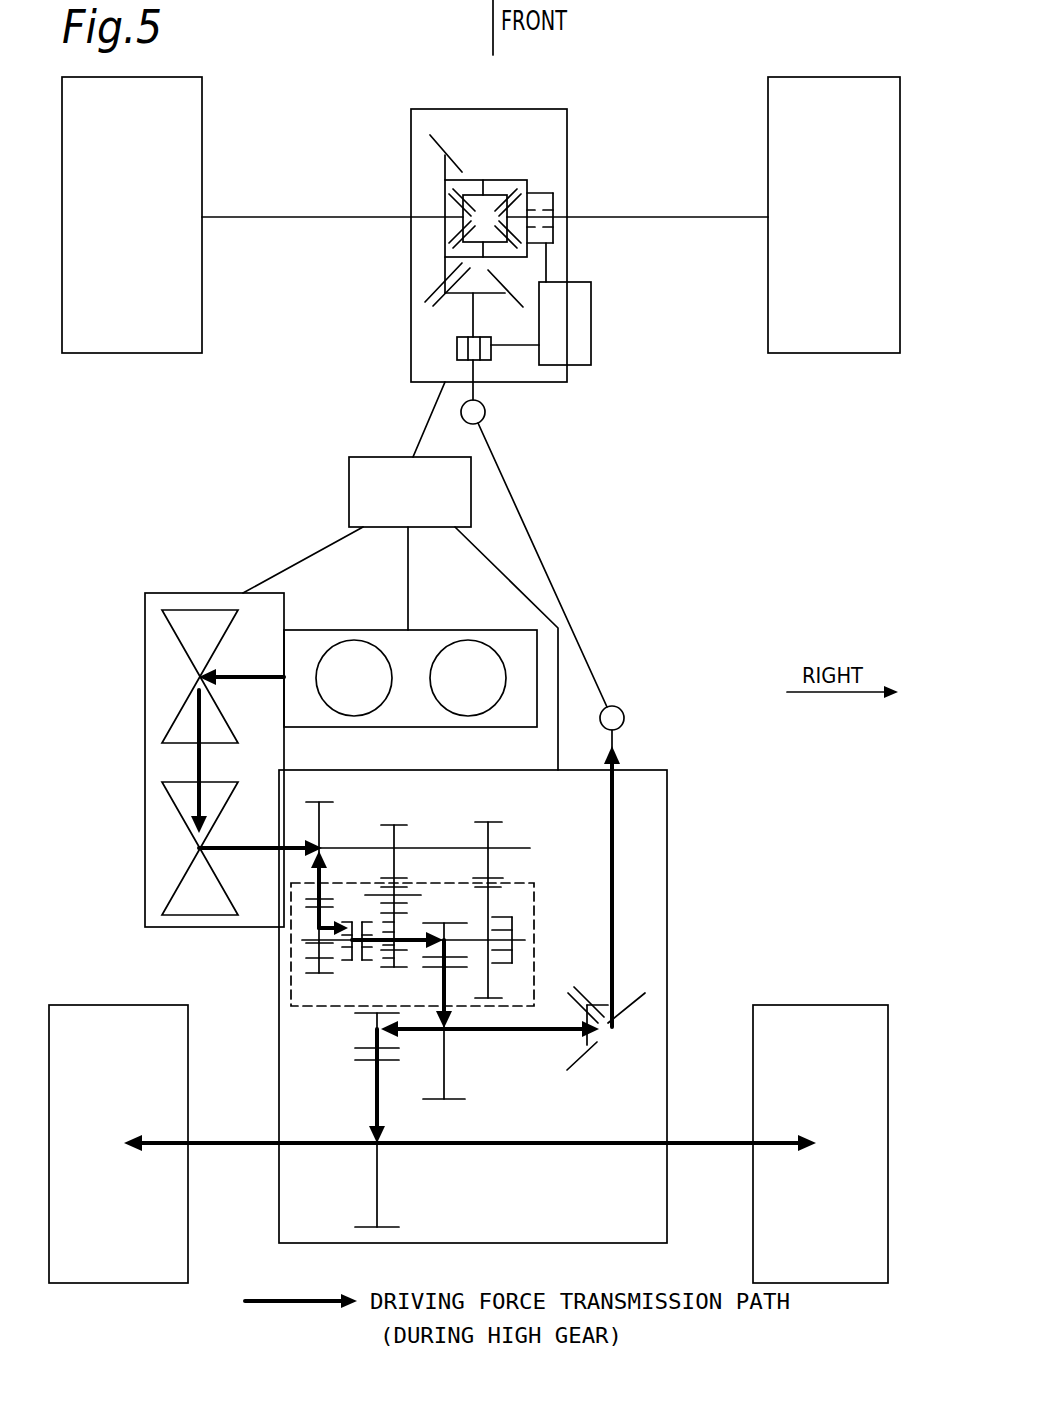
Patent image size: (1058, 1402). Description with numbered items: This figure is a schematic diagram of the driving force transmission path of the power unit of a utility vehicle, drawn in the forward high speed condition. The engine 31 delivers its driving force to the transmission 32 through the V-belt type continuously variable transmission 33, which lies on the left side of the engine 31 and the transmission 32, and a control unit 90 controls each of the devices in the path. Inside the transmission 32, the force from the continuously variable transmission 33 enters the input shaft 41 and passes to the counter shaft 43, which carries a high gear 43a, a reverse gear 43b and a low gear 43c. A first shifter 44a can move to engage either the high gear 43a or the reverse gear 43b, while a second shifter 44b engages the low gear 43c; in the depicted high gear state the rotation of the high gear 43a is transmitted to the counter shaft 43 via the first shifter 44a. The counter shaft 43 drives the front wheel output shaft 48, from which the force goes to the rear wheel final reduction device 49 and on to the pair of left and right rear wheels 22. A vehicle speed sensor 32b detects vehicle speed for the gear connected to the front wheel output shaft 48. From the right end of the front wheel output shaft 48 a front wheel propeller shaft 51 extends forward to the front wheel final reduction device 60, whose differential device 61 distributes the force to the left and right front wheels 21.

The front wheels 21 is at (158, 93).
The rear wheels 22 is at (115, 1270).
The engine 31 is at (432, 642).
The transmission 32 is at (642, 783).
The vehicle speed sensor 32b is at (472, 1105).
The V-belt type continuously variable transmission 33 is at (201, 600).
The input shaft 41 is at (513, 848).
The counter shaft 43 is at (520, 937).
The high gear 43a is at (343, 951).
The reverse gear 43b is at (393, 955).
The low gear 43c is at (510, 916).
The first shifter 44a is at (360, 953).
The second shifter 44b is at (513, 923).
The front wheel output shaft 48 is at (498, 1030).
The rear wheel final reduction device 49 is at (377, 1062).
The front wheel propeller shaft 51 is at (614, 837).
The front wheel final reduction device 60 is at (535, 382).
The differential device 61 is at (503, 180).
The control unit (controller) 90 is at (349, 490).